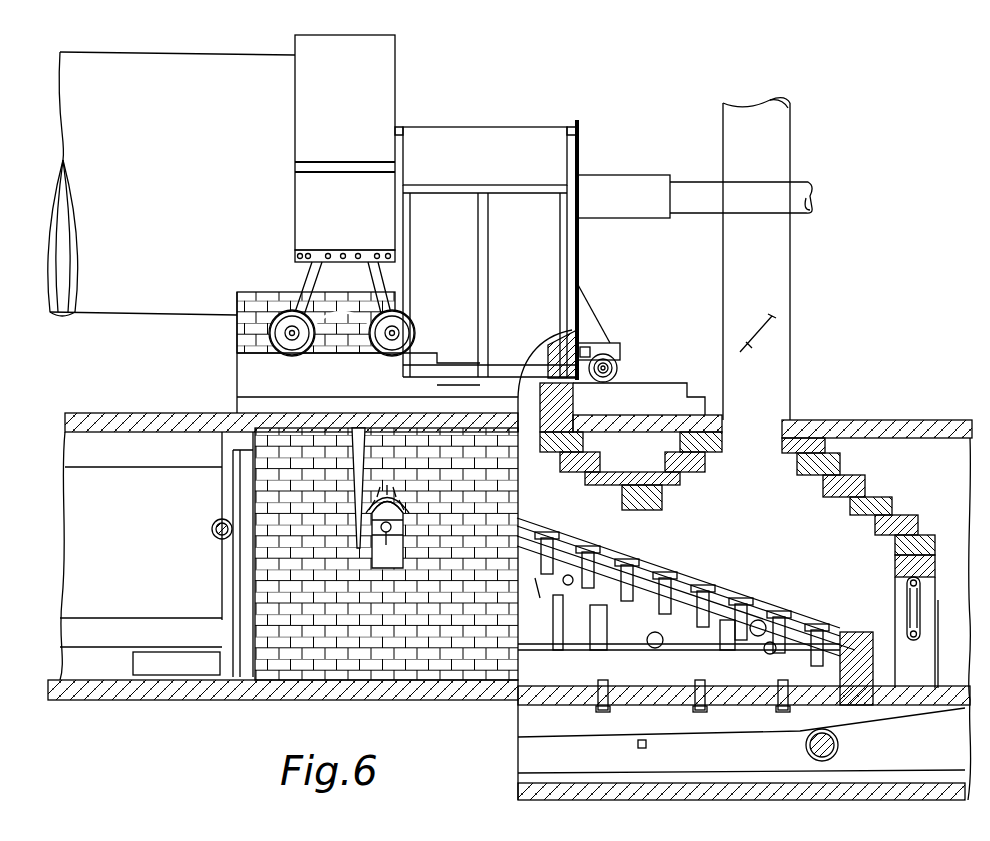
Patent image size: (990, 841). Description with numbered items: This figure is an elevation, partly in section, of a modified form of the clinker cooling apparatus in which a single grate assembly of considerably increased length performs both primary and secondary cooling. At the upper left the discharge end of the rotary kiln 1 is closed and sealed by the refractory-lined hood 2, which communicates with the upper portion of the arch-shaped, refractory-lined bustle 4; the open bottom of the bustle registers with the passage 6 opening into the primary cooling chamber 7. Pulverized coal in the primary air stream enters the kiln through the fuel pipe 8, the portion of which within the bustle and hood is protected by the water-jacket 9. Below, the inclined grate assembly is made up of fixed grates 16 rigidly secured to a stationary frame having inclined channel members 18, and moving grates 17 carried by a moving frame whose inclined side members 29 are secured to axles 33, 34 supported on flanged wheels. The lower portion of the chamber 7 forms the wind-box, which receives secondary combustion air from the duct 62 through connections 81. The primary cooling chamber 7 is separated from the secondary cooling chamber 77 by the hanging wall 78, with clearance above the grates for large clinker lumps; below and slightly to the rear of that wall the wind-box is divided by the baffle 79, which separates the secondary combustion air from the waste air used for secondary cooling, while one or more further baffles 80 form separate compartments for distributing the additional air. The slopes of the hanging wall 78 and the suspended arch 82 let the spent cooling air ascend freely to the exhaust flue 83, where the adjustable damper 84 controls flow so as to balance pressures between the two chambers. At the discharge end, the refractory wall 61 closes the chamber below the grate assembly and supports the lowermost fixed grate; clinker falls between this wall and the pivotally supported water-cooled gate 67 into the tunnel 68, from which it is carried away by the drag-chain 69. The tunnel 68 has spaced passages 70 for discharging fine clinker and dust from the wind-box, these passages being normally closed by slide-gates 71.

The rotary kiln 1 is at (171, 184).
The refractory-lined hood 2 is at (342, 184).
The arch-shaped refractory-lined bustle 4 is at (486, 252).
The passage 6 is at (545, 381).
The primary cooling chamber 7 is at (625, 441).
The fuel pipe 8 is at (741, 197).
The water-jacket 9 is at (636, 176).
The fixed grates 16 is at (712, 575).
The moving grates 17 is at (770, 592).
The inclined channel member 18 is at (665, 562).
The inclined side member 29 is at (531, 590).
The axle 33 is at (387, 526).
The axle 34 is at (565, 585).
The refractory wall 61 is at (873, 665).
The duct 62 is at (141, 646).
The water-cooled gate 67 is at (905, 590).
The tunnel 68 is at (741, 740).
The drag-chain 69 is at (625, 772).
The spaced passages 70 is at (760, 714).
The slide-gates 71 is at (716, 683).
The secondary cooling chamber 77 is at (739, 516).
The hanging wall 78 is at (645, 520).
The baffle 79 is at (595, 622).
The baffle 80 is at (713, 635).
The connections 81 is at (652, 648).
The suspended arch 82 is at (850, 505).
The exhaust flue 83 is at (756, 259).
The adjustable damper 84 is at (752, 346).